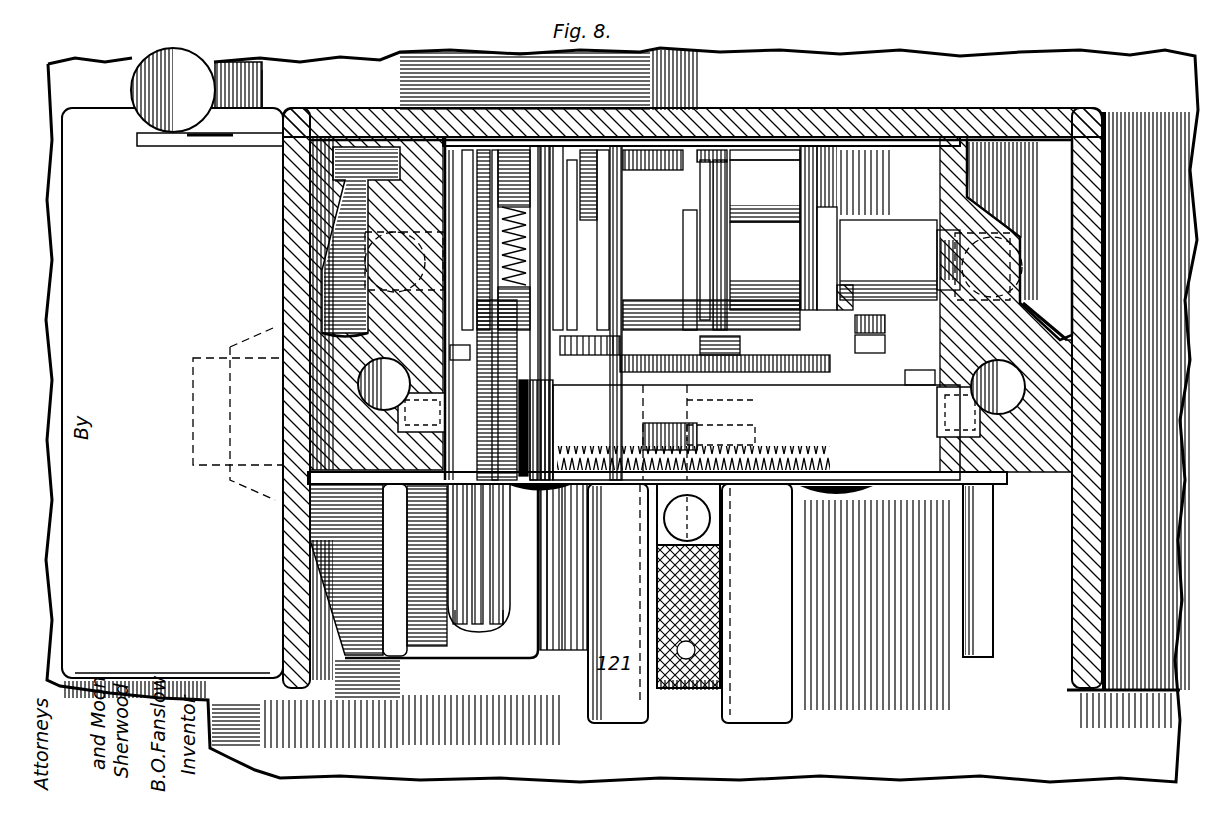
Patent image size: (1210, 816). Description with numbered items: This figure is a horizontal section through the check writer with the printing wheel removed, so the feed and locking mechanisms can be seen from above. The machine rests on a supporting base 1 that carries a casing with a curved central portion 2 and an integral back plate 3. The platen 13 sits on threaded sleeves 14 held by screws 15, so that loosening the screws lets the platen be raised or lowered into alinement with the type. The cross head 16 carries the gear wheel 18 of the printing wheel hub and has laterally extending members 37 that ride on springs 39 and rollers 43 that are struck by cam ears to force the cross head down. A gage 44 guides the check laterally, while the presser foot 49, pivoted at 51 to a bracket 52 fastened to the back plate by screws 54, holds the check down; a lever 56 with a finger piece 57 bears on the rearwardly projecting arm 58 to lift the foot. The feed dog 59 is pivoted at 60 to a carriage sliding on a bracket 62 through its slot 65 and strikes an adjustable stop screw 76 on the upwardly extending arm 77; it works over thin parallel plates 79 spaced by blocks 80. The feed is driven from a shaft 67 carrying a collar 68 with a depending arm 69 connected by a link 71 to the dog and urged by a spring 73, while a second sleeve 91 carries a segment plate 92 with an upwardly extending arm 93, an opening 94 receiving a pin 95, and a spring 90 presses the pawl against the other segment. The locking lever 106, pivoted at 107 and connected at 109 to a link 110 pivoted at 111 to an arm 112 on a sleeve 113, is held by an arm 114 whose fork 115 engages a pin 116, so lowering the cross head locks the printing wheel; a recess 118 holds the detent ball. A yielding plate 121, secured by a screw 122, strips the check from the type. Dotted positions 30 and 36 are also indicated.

The supporting base 1 is at (622, 415).
The curved central portion 2 is at (285, 232).
The back plate 3 is at (910, 125).
The platen 13 is at (695, 621).
The threaded sleeves 14 is at (728, 671).
The screws 15 is at (700, 652).
The cross head 16 is at (775, 458).
The gear wheel 18 is at (740, 353).
The lever (dotted position) 30 is at (347, 332).
The ball (dotted position) 36 is at (1030, 320).
The laterally extending members 37 is at (400, 440).
The springs 39 is at (347, 392).
The rollers 43 is at (912, 381).
The gage 44 is at (250, 85).
The presser foot 49 is at (478, 620).
The pivot 51 is at (612, 249).
The bracket 52 is at (500, 230).
The screws 54 is at (700, 150).
The lever 56 is at (247, 144).
The finger piece 57 is at (133, 89).
The rearwardly projecting arm 58 is at (560, 235).
The feed dog 59 is at (500, 368).
The pivot 60 is at (515, 200).
The bracket 62 is at (424, 591).
The slot 65 is at (453, 612).
The shaft 67 is at (943, 253).
The collar 68 is at (565, 210).
The depending arm 69 is at (470, 205).
The link 71 is at (396, 110).
The spring 73 is at (361, 242).
The adjustable stop screw 76 is at (400, 413).
The upwardly extending arm 77 is at (507, 418).
The parallel plates 79 is at (465, 547).
The blocks 80 is at (480, 517).
The spring 90 is at (603, 343).
The second sleeve 91 is at (653, 196).
The segment plate 92 is at (700, 150).
The upwardly extending arm 93 is at (685, 266).
The opening 94 is at (588, 218).
The pin 95 is at (585, 185).
The locking lever 106 is at (740, 402).
The pivot 107 is at (760, 432).
The pivot 109 is at (730, 331).
The link 110 is at (730, 307).
The pivot 111 is at (706, 160).
The arm 112 is at (765, 191).
The sleeve 113 is at (733, 242).
The arm 114 is at (830, 240).
The fork 115 is at (860, 346).
The pin 116 is at (860, 326).
The recess 118 is at (710, 523).
The yielding plate 121 is at (787, 210).
The screw 122 is at (773, 162).